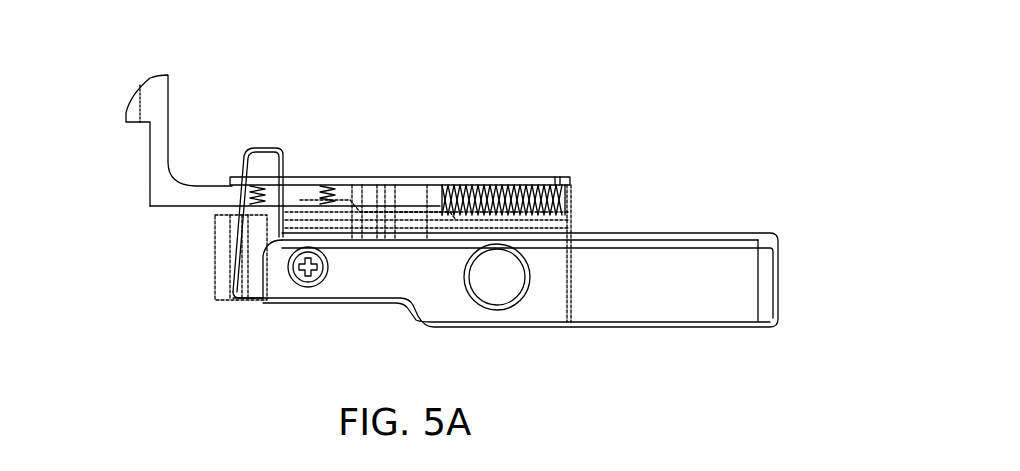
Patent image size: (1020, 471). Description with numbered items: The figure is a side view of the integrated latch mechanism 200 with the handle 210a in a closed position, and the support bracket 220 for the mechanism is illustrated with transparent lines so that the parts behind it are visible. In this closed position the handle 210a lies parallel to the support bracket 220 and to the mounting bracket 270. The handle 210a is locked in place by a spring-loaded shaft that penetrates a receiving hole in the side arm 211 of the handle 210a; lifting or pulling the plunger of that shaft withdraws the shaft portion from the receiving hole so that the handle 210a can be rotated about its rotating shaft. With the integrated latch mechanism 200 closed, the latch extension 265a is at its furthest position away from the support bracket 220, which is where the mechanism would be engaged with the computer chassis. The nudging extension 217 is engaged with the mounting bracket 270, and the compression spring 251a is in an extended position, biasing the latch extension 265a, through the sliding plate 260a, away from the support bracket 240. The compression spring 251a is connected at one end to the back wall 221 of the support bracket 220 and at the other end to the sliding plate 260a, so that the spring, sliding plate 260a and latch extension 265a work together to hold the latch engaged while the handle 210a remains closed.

The integrated latch mechanism 200 is at (672, 60).
The latch extension 265a is at (150, 162).
The support bracket 220 is at (572, 203).
The back wall 221 is at (568, 177).
The compression spring 251a is at (518, 180).
The sliding plate 260a is at (360, 177).
The mounting bracket 270 is at (441, 177).
The nudging extension 217 is at (245, 260).
The handle 210a is at (780, 283).
The support bracket 240 is at (510, 285).
The side arm 211 is at (672, 293).